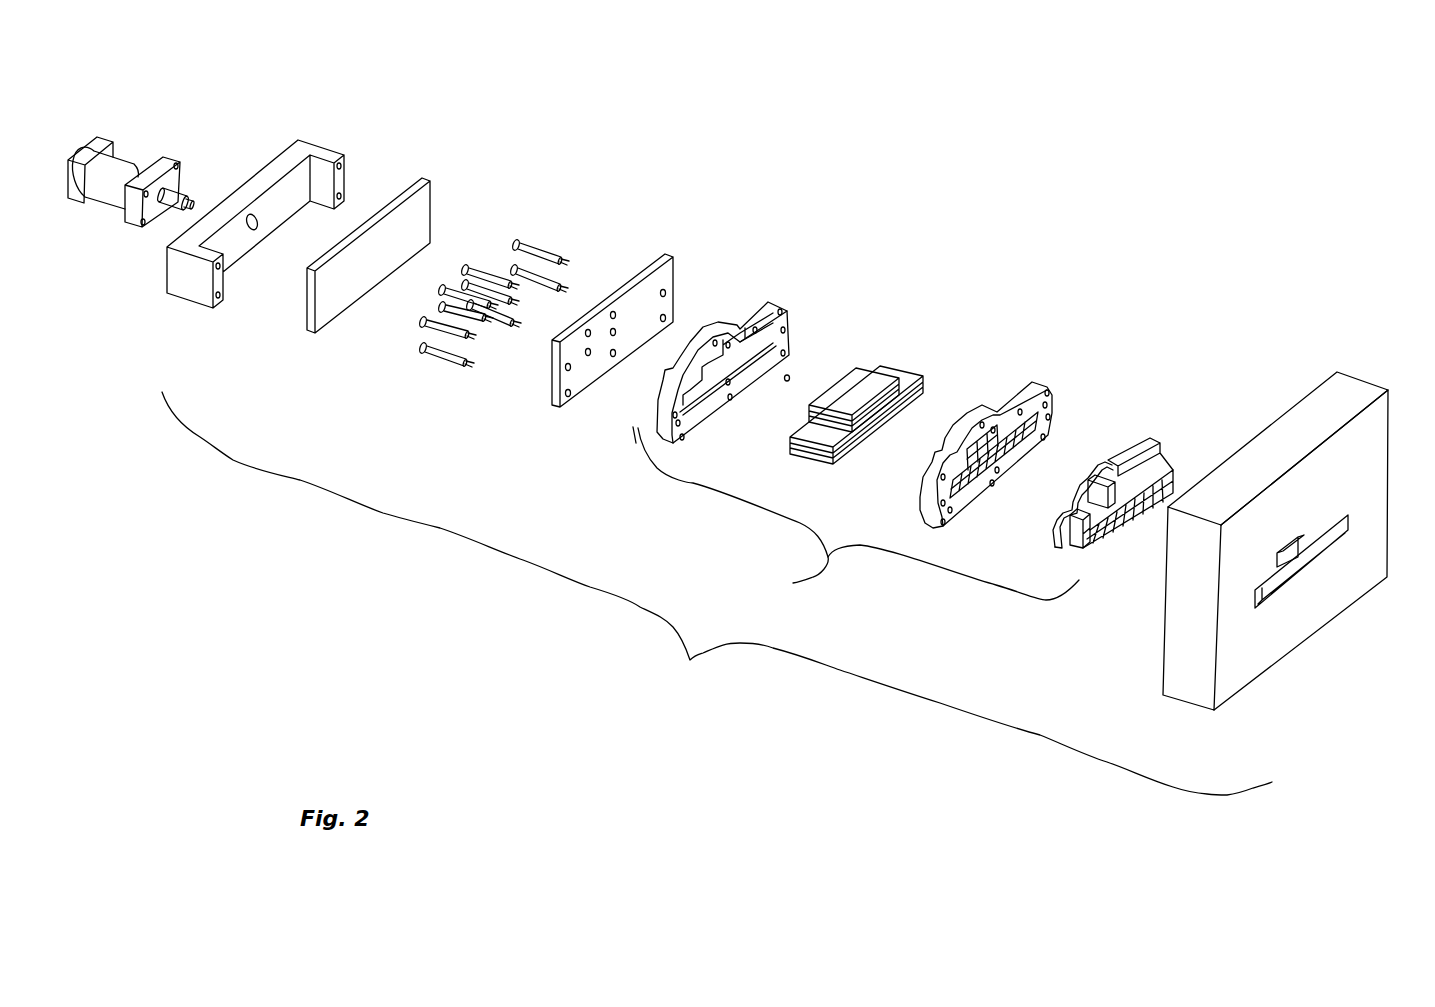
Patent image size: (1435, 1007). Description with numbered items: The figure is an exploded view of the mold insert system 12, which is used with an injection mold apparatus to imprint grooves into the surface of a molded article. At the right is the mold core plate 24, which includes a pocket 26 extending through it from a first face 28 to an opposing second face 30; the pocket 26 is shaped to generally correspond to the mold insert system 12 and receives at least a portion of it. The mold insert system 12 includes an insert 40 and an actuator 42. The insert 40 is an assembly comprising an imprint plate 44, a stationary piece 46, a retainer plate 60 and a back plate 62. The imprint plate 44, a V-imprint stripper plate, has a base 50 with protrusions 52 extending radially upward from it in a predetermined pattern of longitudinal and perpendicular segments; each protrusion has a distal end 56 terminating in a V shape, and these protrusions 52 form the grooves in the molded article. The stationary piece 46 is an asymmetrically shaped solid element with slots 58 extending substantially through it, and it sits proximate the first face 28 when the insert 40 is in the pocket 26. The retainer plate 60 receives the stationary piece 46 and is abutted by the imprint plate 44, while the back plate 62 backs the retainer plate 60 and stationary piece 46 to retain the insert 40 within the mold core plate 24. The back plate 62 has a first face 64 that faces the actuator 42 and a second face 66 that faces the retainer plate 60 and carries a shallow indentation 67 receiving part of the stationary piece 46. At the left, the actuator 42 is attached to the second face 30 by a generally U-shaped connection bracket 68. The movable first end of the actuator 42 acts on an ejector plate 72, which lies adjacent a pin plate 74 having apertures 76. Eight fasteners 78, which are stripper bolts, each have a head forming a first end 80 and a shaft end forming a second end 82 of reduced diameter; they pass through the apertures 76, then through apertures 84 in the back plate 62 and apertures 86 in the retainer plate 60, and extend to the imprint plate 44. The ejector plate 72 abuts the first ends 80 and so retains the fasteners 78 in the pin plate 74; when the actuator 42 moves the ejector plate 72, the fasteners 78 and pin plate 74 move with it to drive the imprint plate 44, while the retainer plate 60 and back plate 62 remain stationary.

The mold insert system 12 is at (683, 656).
The mold core plate 24 is at (1183, 640).
The pocket 26 is at (1296, 566).
The first face 28 is at (1353, 420).
The second face 30 is at (1312, 385).
The insert 40 is at (793, 583).
The actuator 42 is at (103, 138).
The imprint plate 44 is at (1140, 443).
The stationary piece 46 is at (917, 372).
The base 50 is at (1176, 452).
The protrusions 52 is at (1182, 450).
The distal end 56 is at (1182, 468).
The slots 58 is at (923, 382).
The retainer plate 60 is at (1043, 383).
The back plate 62 is at (635, 443).
The first face 64 is at (740, 318).
The second face 66 is at (787, 377).
The shallow indentation 67 is at (707, 388).
The connection bracket 68 is at (179, 300).
The ejector plate 72 is at (310, 334).
The pin plate 74 is at (554, 408).
The apertures 76 is at (662, 290).
The fasteners 78 is at (466, 368).
The first end 80 is at (514, 244).
The second end 82 is at (570, 268).
The apertures 84 is at (785, 318).
The apertures 86 is at (1050, 386).